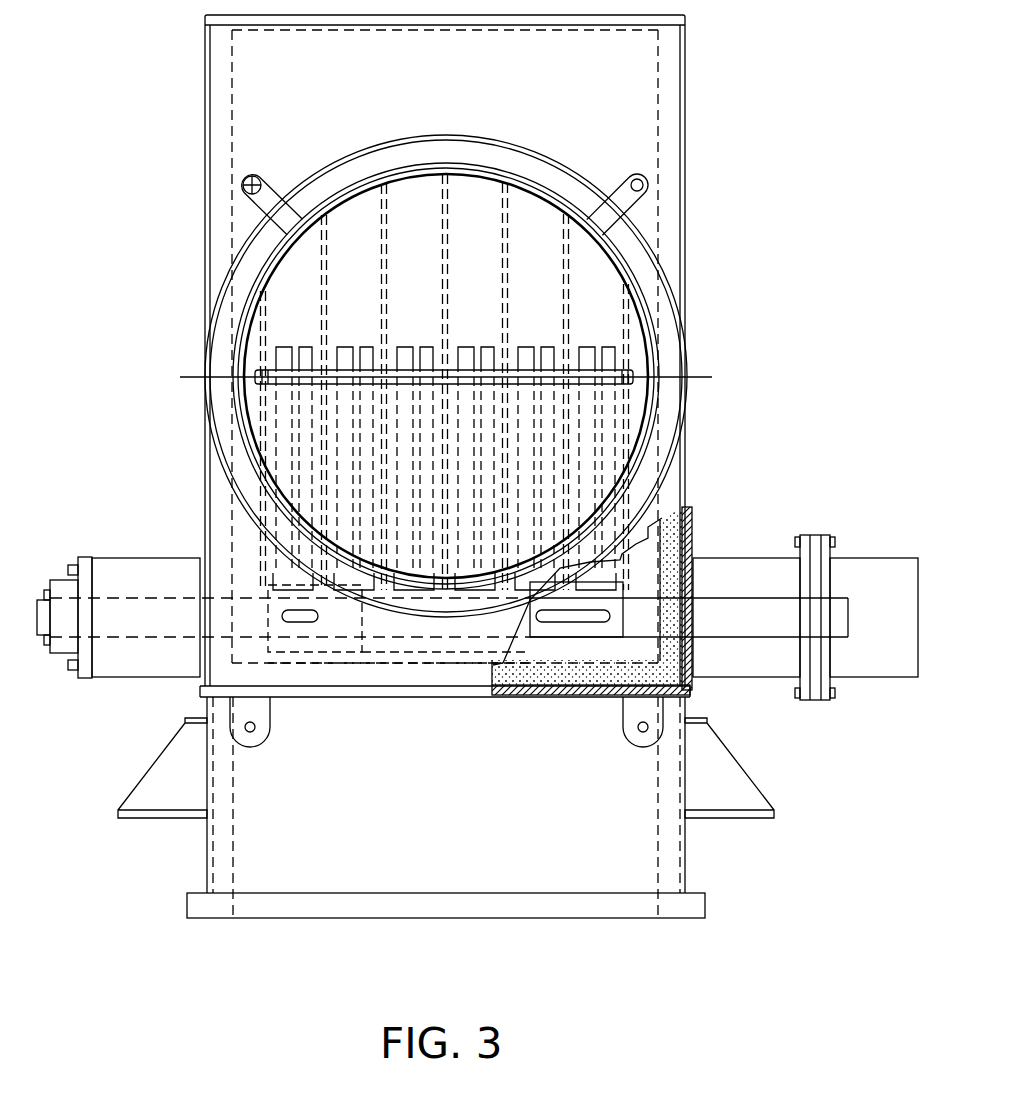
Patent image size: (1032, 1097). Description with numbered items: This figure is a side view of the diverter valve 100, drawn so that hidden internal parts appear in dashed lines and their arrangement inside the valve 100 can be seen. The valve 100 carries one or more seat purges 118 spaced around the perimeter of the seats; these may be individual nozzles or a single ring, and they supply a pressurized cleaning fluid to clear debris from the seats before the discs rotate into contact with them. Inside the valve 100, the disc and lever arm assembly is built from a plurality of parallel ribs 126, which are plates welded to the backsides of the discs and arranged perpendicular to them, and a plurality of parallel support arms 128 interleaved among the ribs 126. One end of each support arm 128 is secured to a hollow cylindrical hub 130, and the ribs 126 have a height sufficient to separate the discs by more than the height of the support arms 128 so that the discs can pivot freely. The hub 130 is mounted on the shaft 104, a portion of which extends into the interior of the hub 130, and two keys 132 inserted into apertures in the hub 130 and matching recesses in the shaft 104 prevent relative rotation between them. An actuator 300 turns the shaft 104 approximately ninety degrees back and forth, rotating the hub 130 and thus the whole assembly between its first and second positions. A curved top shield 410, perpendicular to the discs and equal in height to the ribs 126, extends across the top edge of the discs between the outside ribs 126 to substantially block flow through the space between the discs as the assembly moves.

The valve 100 is at (97, 86).
The shaft 104 is at (603, 662).
The seat purge 118 is at (241, 186).
The ribs 126 is at (320, 290).
The support arms 128 is at (738, 312).
The hub 130 is at (302, 650).
The keys 132 is at (552, 617).
The actuator 300 is at (868, 557).
The top shield 410 is at (470, 175).